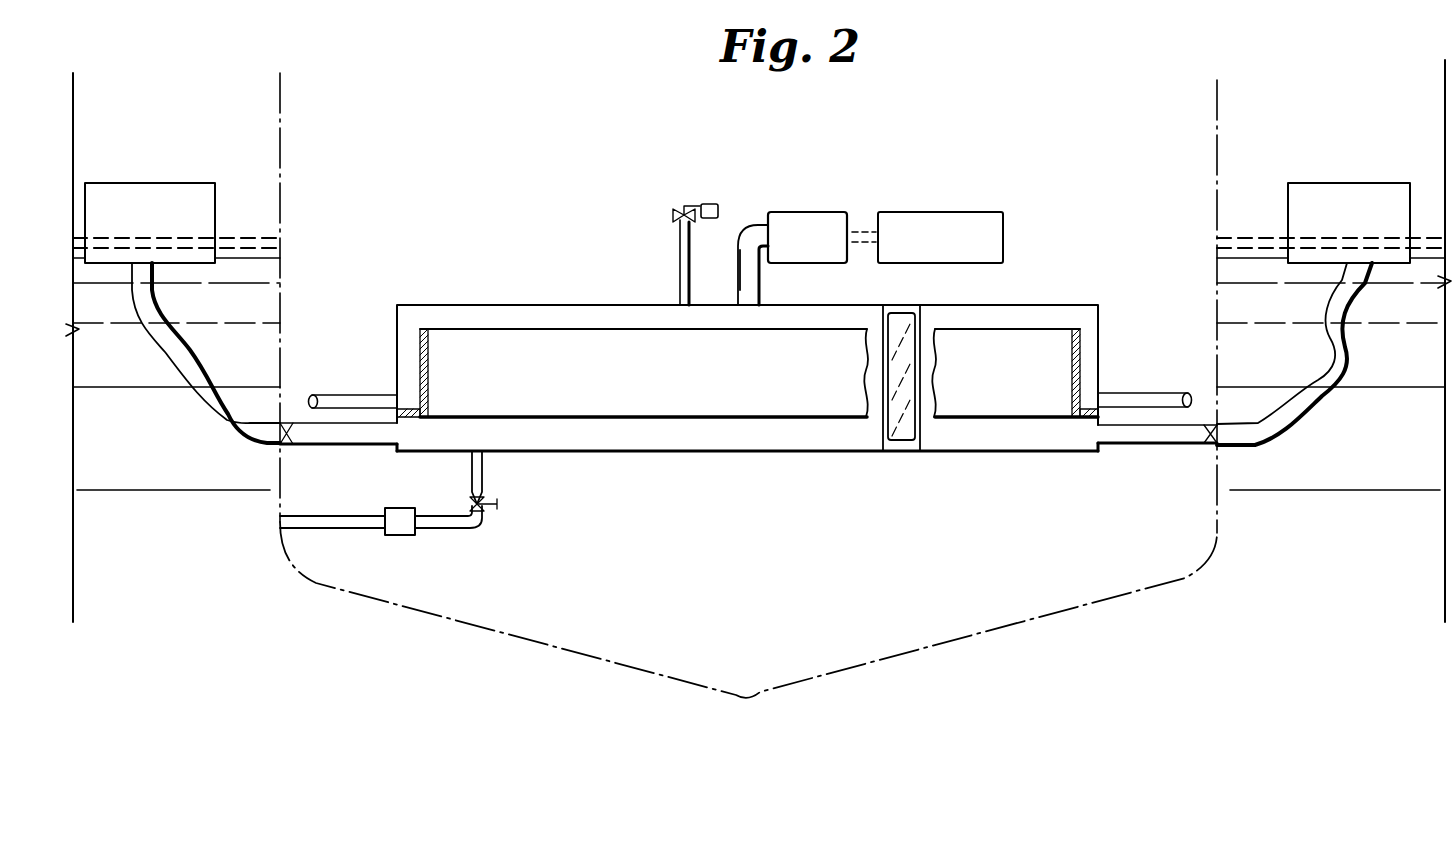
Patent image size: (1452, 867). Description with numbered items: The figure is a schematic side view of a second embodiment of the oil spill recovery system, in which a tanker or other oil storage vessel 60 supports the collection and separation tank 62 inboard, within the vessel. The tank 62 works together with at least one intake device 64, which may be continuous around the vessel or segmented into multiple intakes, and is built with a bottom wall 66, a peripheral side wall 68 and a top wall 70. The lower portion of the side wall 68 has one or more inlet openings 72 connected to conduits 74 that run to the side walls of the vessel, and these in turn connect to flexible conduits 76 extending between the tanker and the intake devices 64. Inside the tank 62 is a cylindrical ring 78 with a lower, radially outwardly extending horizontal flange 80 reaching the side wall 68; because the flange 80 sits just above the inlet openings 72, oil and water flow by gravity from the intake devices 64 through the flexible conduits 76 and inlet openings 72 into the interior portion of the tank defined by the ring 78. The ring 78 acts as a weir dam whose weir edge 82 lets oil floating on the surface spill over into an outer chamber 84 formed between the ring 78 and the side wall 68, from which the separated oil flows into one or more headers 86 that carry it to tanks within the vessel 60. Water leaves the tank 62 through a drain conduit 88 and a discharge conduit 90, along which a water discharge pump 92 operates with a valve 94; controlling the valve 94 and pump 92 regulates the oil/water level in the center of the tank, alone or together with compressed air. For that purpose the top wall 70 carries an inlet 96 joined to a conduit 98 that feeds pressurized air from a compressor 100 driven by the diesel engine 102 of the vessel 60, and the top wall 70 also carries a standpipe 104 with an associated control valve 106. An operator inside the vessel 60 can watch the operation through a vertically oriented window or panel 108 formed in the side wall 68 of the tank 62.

The oil storage vessel 60 is at (1218, 131).
The tank 62 is at (1113, 331).
The intake device 64 is at (176, 185).
The bottom wall 66 is at (766, 453).
The peripheral side wall 68 is at (396, 332).
The top wall 70 is at (752, 377).
The inlet openings 72 is at (393, 453).
The conduits 74 is at (326, 447).
The flexible conduits 76 is at (192, 376).
The cylindrical ring 78 is at (430, 365).
The horizontal flange 80 is at (412, 410).
The weir edge 82 is at (522, 331).
The outer chamber 84 is at (1083, 380).
The headers 86 is at (336, 393).
The drain conduit 88 is at (484, 459).
The discharge conduit 90 is at (338, 531).
The water discharge pump 92 is at (388, 537).
The valve 94 is at (488, 507).
The inlet 96 is at (752, 298).
The conduit 98 is at (762, 282).
The compressor 100 is at (824, 216).
The diesel engine 102 is at (968, 216).
The standpipe 104 is at (678, 267).
The control valve 106 is at (682, 211).
The window 108 is at (910, 372).